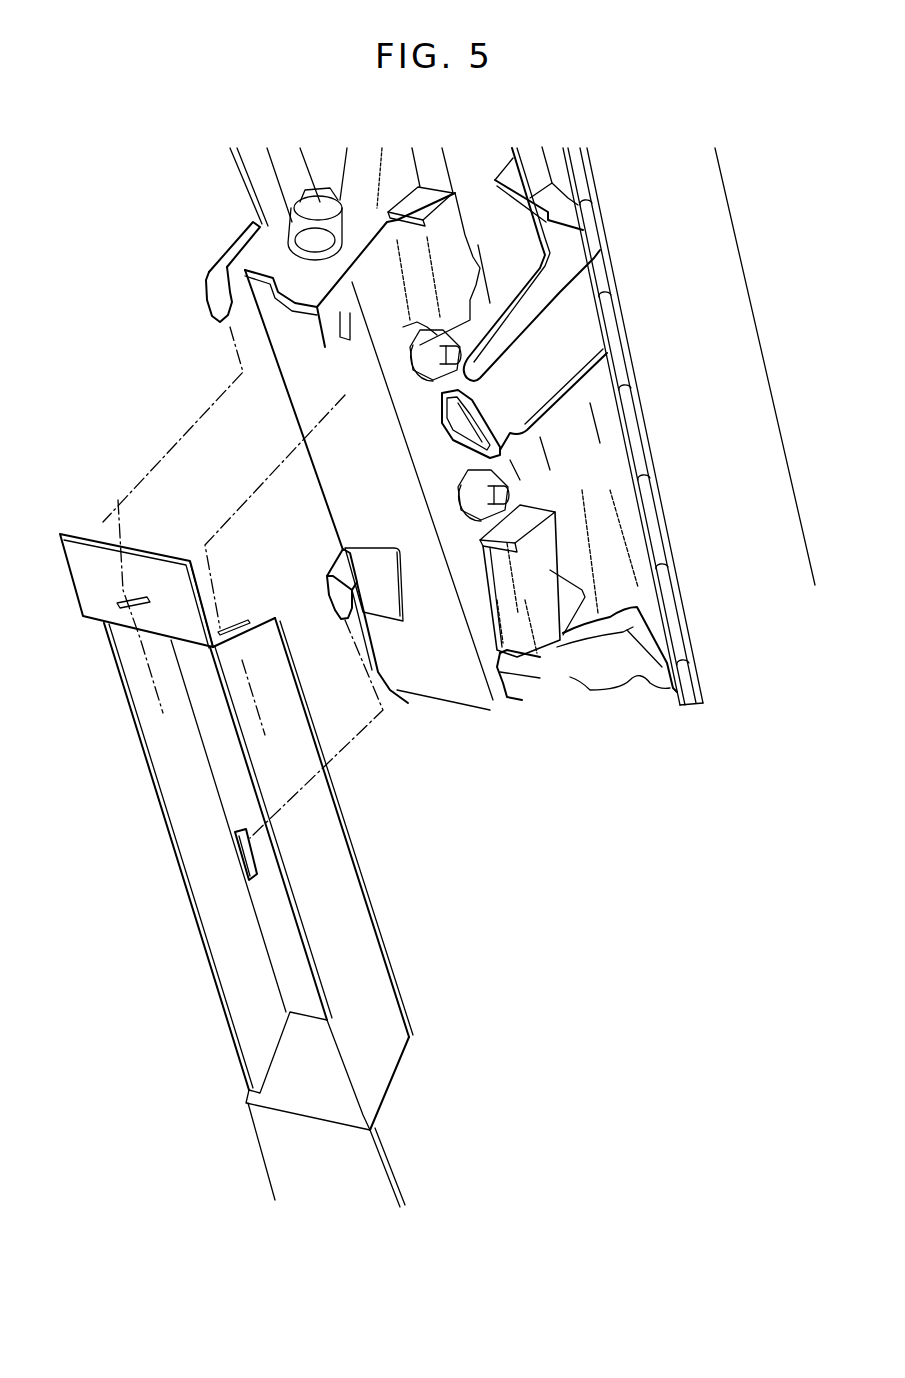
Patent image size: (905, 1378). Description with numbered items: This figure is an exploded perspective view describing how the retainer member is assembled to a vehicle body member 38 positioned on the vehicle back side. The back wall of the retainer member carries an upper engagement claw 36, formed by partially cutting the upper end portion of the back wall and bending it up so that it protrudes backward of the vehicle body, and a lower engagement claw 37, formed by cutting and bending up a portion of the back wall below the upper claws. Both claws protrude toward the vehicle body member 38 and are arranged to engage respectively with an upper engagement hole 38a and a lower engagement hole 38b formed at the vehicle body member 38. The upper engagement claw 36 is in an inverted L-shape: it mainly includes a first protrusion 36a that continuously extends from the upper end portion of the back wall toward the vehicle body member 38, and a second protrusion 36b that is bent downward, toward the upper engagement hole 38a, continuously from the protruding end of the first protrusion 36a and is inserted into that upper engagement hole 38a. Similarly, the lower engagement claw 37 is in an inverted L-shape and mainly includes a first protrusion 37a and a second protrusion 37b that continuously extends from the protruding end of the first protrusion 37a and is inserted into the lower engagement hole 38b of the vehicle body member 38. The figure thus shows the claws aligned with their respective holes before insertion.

The upper engagement claw 36 is at (88, 257).
The first protrusion 36a is at (228, 260).
The second protrusion 36b is at (215, 305).
The lower engagement claw 37 is at (288, 523).
The first protrusion 37a is at (340, 567).
The second protrusion 37b is at (330, 596).
The vehicle body member 38 is at (150, 838).
The upper engagement hole 38a is at (123, 599).
The lower engagement hole 38b is at (256, 862).